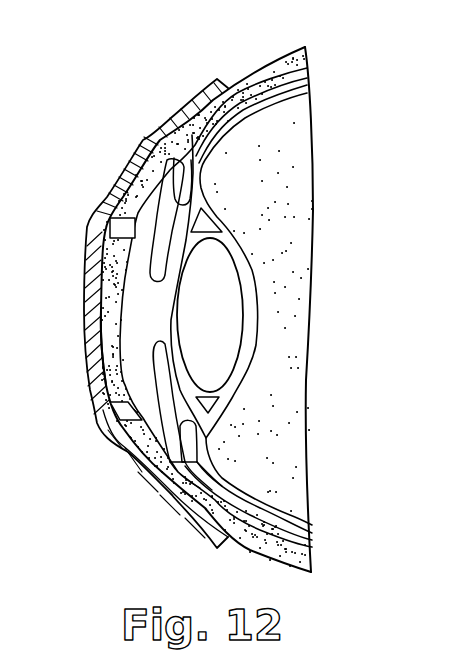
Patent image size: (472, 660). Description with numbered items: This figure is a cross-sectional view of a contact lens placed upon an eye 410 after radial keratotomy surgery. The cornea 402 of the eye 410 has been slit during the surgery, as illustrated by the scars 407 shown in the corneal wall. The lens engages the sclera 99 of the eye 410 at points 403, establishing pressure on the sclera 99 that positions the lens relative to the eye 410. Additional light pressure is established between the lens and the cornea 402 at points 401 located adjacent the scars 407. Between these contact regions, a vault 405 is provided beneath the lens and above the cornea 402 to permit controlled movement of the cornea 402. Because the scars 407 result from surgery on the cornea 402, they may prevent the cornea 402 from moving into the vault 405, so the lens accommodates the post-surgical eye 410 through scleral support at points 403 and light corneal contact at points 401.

The sclera 99 is at (265, 65).
The points 401 is at (212, 85).
The cornea 402 is at (102, 297).
The points 403 is at (150, 140).
The vault 405 is at (96, 325).
The scars 407 is at (110, 236).
The eye 410 is at (293, 260).